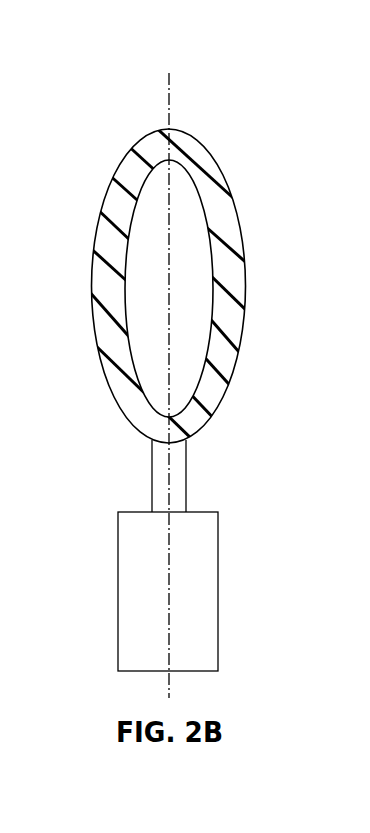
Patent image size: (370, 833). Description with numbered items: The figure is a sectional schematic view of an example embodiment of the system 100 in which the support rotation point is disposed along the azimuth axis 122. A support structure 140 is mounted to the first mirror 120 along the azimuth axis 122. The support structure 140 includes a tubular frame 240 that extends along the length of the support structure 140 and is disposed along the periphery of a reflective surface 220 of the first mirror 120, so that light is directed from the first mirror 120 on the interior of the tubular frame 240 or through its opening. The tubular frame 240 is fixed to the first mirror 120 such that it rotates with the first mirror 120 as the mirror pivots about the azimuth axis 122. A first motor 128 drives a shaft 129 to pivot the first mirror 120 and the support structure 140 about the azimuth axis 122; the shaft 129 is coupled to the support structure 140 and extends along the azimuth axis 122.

The system 100 is at (238, 34).
The azimuth axis 122 is at (170, 100).
The support structure 140 is at (130, 128).
The tubular frame 240 is at (197, 155).
The reflective surface 220 is at (188, 220).
The first mirror 120 is at (190, 268).
The shaft 129 is at (187, 483).
The first motor 128 is at (218, 592).